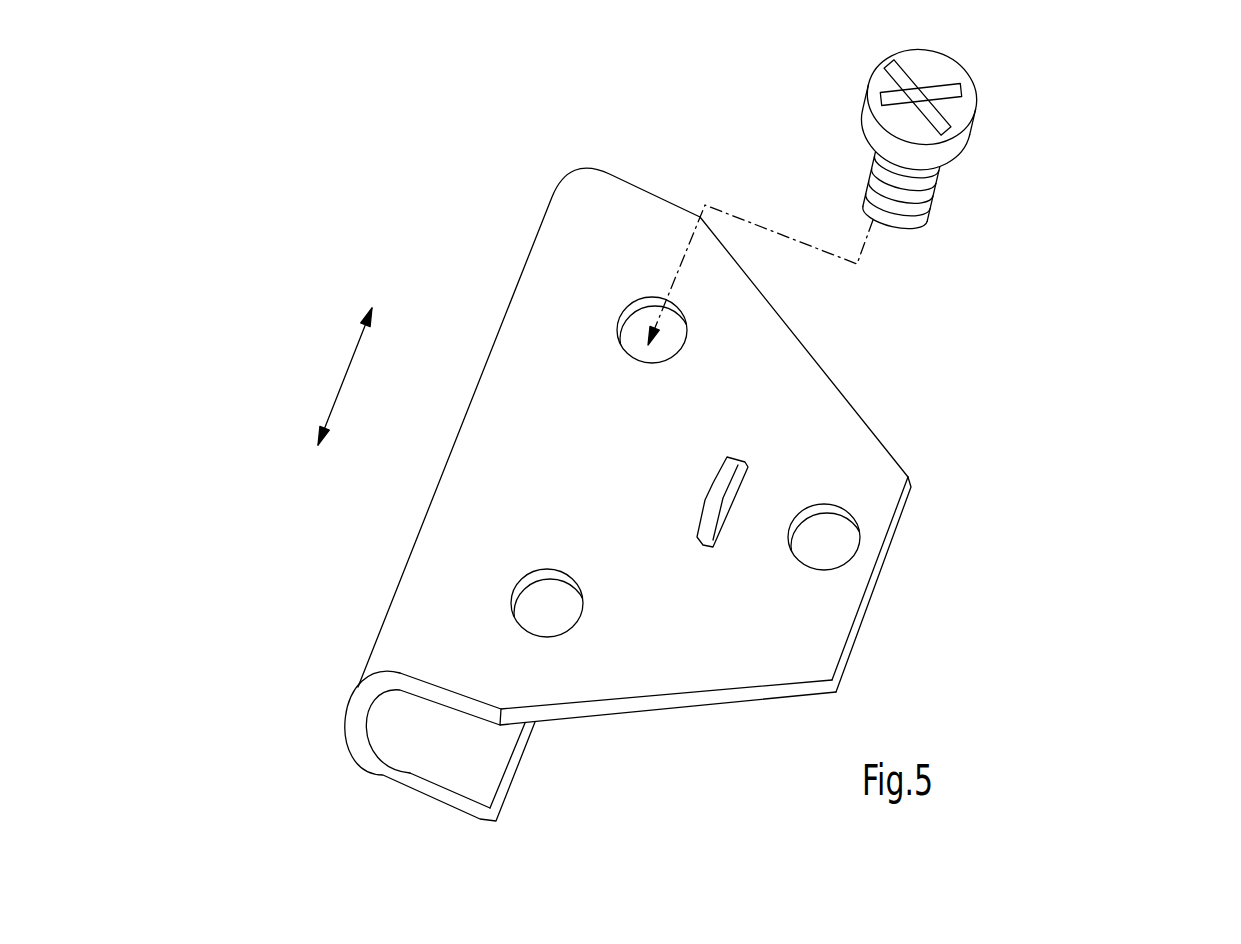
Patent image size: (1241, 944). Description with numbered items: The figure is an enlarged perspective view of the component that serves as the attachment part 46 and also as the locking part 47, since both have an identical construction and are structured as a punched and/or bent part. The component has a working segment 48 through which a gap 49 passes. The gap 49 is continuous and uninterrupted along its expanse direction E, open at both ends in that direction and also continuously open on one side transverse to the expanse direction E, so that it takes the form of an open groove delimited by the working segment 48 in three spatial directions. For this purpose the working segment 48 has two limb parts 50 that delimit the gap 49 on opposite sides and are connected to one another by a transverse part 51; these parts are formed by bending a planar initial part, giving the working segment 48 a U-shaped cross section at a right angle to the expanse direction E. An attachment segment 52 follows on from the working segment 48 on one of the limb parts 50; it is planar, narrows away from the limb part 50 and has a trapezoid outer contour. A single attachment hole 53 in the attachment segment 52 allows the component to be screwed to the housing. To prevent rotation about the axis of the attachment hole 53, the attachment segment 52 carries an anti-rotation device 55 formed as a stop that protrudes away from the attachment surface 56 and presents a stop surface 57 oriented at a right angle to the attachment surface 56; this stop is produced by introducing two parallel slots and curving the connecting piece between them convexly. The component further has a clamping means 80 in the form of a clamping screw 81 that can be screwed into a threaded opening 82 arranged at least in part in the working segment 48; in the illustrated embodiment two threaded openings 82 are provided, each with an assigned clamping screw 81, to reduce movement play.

The attachment part 46 is at (706, 457).
The locking part 47 is at (1037, 191).
The working segment 48 is at (355, 795).
The gap 49 is at (447, 728).
The limb parts 50 is at (380, 677).
The transverse part 51 is at (357, 720).
The attachment segment 52 is at (897, 362).
The attachment hole 53 is at (847, 527).
The anti-rotation device 55 is at (725, 455).
The attachment surface 56 is at (863, 467).
The stop surface 57 is at (730, 505).
The clamping means 80 is at (857, 139).
The clamping screw 81 is at (863, 112).
The threaded opening 82 is at (648, 292).
The expanse direction E is at (340, 385).